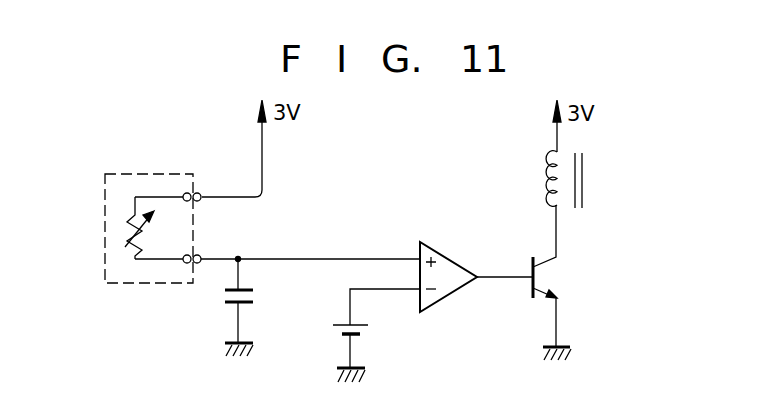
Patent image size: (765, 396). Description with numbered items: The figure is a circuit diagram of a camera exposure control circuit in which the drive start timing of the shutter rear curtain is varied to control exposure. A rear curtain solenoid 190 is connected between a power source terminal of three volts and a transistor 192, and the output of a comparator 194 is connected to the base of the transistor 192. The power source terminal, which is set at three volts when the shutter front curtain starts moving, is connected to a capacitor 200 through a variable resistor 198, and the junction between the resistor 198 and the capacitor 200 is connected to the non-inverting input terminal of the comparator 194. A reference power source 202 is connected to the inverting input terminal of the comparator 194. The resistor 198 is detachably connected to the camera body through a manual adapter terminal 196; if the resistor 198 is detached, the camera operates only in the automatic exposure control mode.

The rear curtain solenoid 190 is at (587, 175).
The transistor 192 is at (553, 287).
The comparator 194 is at (470, 272).
The manual adapter terminal 196 is at (200, 200).
The variable resistor 198 is at (130, 217).
The capacitor 200 is at (257, 297).
The reference power source 202 is at (365, 332).